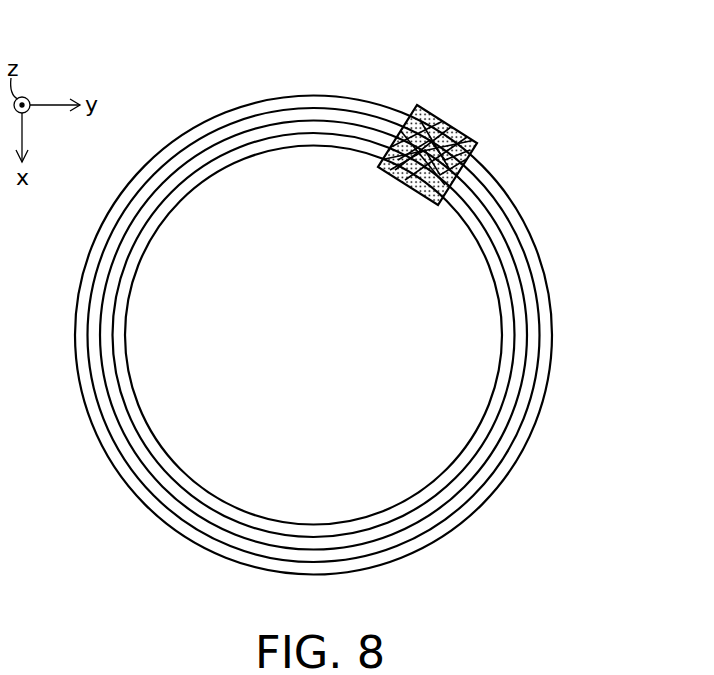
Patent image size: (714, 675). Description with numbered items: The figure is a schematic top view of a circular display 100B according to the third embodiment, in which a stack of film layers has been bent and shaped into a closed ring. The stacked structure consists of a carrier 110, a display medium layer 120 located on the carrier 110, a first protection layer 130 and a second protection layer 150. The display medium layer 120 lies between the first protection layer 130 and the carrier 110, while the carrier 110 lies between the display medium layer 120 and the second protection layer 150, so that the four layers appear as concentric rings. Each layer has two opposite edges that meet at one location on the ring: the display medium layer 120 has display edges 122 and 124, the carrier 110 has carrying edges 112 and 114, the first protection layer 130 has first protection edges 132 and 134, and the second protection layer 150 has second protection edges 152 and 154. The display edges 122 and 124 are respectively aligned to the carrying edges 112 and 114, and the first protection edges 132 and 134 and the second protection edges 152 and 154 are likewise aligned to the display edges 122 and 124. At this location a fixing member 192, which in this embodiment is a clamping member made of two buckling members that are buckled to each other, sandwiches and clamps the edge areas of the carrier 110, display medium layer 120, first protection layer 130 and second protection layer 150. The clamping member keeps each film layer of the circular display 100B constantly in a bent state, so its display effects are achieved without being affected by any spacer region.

The circular display 100B is at (625, 591).
The carrier 110 is at (520, 340).
The carrying edge 112 is at (458, 188).
The carrying edge 114 is at (389, 148).
The display medium layer 120 is at (532, 307).
The display edge 122 is at (462, 168).
The display edge 124 is at (402, 128).
The first protection layer 130 is at (540, 276).
The first protection edge 132 is at (473, 153).
The first protection edge 134 is at (417, 103).
The second protection layer 150 is at (503, 387).
The second protection edge 152 is at (452, 205).
The second protection edge 154 is at (387, 149).
The fixing member 192 is at (447, 120).